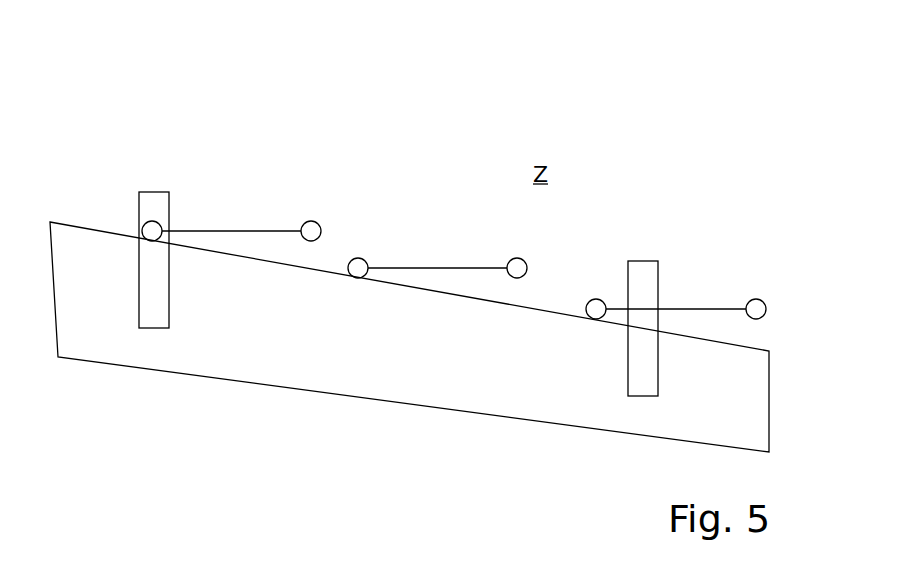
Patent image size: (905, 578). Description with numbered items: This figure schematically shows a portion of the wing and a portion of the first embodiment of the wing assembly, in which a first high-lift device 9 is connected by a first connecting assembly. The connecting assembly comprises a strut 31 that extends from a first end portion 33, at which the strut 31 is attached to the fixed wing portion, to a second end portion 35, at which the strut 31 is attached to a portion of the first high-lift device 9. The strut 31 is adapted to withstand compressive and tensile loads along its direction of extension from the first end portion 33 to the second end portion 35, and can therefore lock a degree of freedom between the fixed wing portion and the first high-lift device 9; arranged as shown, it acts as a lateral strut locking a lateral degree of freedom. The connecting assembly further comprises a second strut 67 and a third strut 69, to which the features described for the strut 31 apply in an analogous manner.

The first high-lift device 9 is at (772, 390).
The strut 31 is at (225, 229).
The first end portion 33 is at (311, 221).
The second end portion 35 is at (152, 222).
The second strut 67 is at (432, 267).
The third strut 69 is at (712, 307).